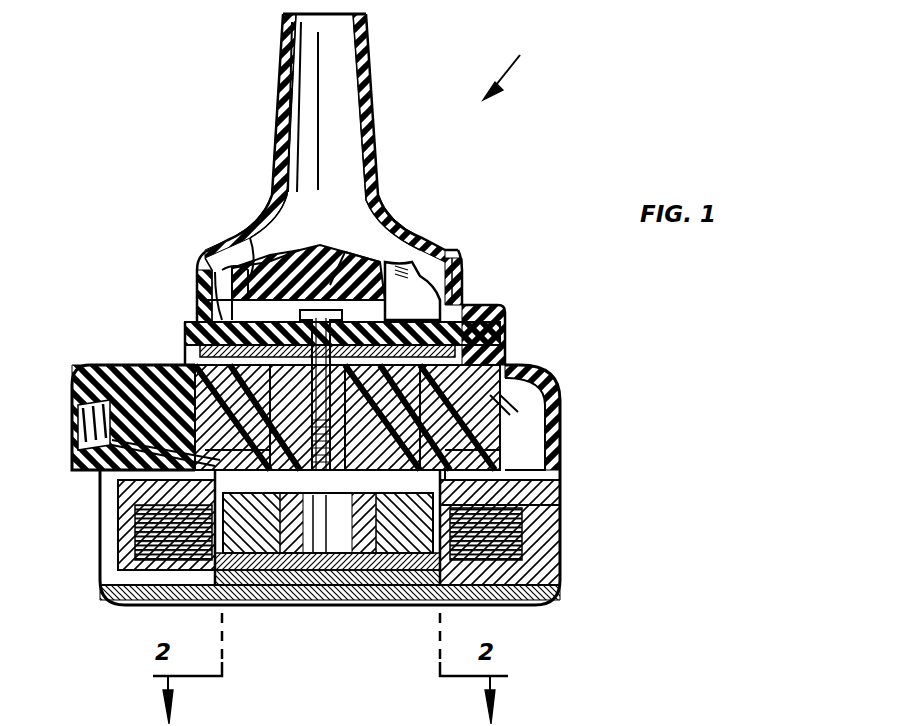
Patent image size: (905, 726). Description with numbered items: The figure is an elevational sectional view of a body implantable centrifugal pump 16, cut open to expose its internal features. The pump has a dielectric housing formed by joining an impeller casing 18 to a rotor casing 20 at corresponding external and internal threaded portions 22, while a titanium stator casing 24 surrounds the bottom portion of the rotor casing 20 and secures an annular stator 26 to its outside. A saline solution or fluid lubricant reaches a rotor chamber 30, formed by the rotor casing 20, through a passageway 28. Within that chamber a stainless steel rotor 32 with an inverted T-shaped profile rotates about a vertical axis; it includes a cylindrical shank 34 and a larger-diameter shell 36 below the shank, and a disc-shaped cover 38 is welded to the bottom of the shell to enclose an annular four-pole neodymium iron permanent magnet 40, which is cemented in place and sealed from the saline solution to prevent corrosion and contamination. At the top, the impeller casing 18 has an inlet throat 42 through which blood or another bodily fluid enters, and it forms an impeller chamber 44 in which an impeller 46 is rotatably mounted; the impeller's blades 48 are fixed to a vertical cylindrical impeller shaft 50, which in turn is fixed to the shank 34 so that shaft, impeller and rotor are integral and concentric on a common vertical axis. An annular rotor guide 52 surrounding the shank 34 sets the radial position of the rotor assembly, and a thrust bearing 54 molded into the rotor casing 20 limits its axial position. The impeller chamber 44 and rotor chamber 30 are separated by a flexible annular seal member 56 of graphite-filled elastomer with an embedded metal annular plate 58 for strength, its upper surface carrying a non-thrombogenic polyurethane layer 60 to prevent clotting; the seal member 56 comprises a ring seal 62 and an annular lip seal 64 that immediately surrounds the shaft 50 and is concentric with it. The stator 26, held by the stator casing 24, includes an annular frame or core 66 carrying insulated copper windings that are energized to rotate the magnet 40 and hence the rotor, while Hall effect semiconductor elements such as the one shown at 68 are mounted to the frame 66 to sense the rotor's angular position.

The centrifugal pump 16 is at (522, 65).
The impeller casing 18 is at (418, 242).
The rotor casing 20 is at (545, 430).
The threaded portions 22 is at (560, 392).
The stator casing 24 is at (560, 576).
The stator 26 is at (540, 536).
The passageway 28 is at (100, 470).
The rotor chamber 30 is at (165, 605).
The rotor 32 is at (490, 350).
The shank 34 is at (460, 300).
The shell 36 is at (420, 600).
The cover 38 is at (383, 600).
The permanent magnet 40 is at (262, 600).
The inlet throat 42 is at (370, 97).
The impeller chamber 44 is at (262, 250).
The impeller 46 is at (255, 258).
The impeller blades 48 is at (314, 258).
The impeller shaft 50 is at (409, 291).
The rotor guide 52 is at (75, 385).
The thrust bearing 54 is at (328, 600).
The seal member 56 is at (185, 332).
The annular plate 58 is at (200, 350).
The polyurethane layer 60 is at (228, 268).
The ring seal 62 is at (222, 290).
The lip seal 64 is at (335, 268).
The stator frame 66 is at (135, 542).
The Hall effect semiconductor element 68 is at (560, 490).